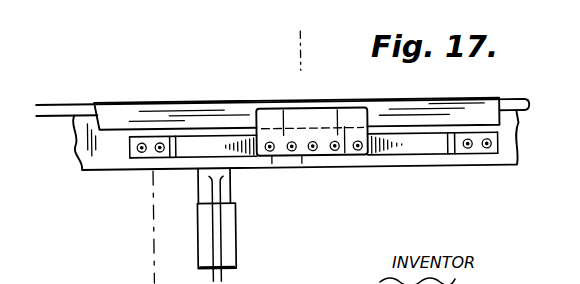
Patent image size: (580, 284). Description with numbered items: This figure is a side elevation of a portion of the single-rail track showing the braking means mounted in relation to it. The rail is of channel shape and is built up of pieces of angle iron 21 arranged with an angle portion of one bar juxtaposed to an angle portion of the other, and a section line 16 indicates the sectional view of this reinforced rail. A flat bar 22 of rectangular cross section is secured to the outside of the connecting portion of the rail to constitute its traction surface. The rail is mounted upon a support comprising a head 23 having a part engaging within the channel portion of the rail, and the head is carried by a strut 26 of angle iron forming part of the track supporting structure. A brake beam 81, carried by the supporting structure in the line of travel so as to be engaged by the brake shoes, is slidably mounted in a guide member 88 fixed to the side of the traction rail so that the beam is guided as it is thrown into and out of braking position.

The figure reference 16 is at (319, 31).
The angle iron 21 is at (108, 157).
The flat bar 22 is at (74, 114).
The head 23 is at (230, 194).
The strut 26 is at (235, 240).
The brake beam 81 is at (217, 104).
The guide member 88 is at (320, 158).